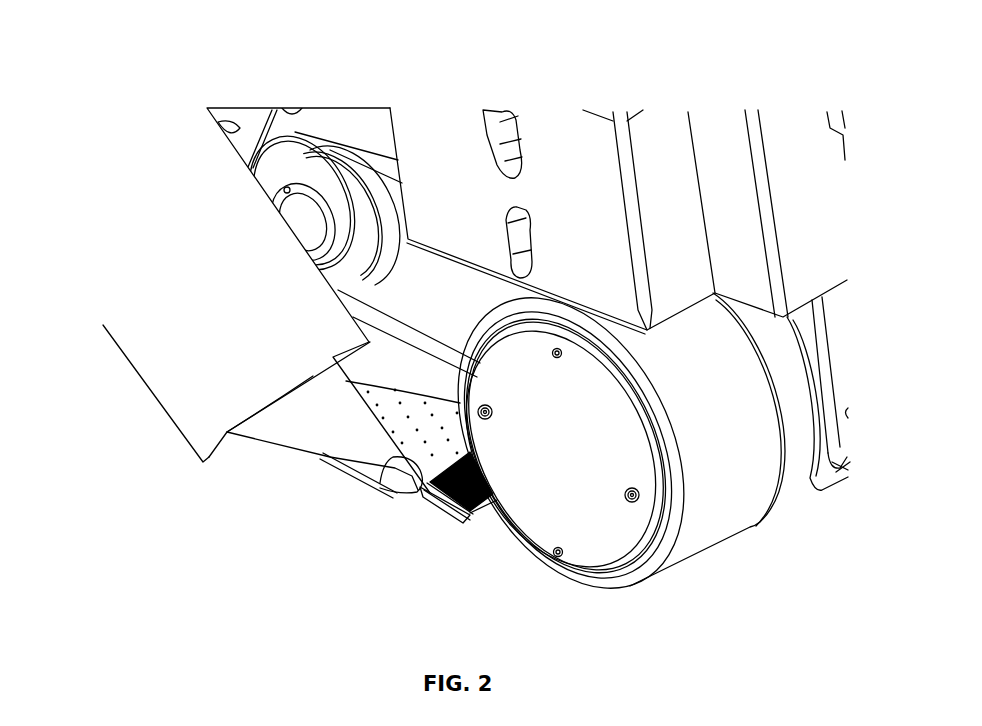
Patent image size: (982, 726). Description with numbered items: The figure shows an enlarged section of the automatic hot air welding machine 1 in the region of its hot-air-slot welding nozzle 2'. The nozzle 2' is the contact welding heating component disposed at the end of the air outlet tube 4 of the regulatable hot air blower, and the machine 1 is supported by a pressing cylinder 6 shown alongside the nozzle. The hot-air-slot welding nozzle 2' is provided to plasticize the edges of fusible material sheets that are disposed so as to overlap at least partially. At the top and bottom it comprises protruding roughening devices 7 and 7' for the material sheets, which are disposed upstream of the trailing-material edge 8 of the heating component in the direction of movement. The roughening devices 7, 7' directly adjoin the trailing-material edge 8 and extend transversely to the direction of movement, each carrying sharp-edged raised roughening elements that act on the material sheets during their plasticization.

The automatic hot air welding machine 1 is at (458, 260).
The hot-air-slot welding nozzle 2' is at (419, 555).
The air outlet tube 4 is at (203, 373).
The pressing cylinder 6 is at (713, 512).
The roughening device 7 is at (462, 537).
The roughening device 7' is at (447, 560).
The trailing-material edge 8 is at (497, 518).